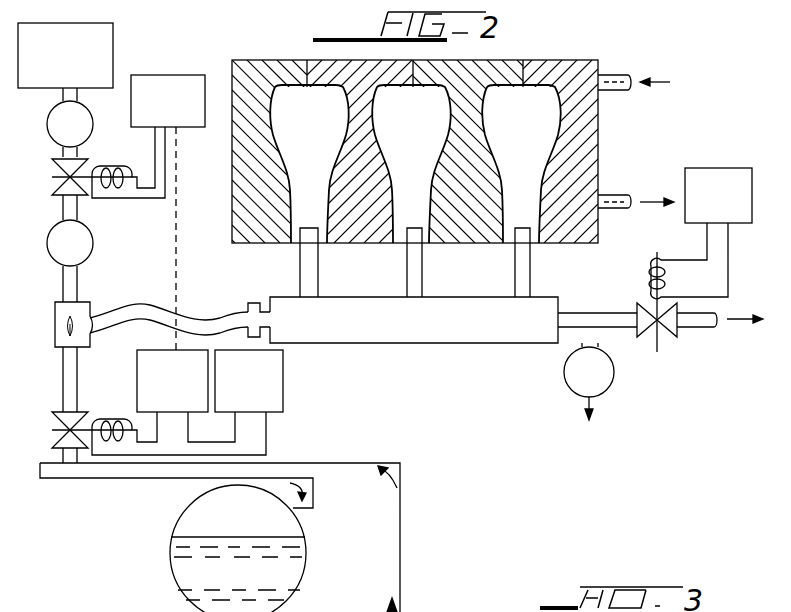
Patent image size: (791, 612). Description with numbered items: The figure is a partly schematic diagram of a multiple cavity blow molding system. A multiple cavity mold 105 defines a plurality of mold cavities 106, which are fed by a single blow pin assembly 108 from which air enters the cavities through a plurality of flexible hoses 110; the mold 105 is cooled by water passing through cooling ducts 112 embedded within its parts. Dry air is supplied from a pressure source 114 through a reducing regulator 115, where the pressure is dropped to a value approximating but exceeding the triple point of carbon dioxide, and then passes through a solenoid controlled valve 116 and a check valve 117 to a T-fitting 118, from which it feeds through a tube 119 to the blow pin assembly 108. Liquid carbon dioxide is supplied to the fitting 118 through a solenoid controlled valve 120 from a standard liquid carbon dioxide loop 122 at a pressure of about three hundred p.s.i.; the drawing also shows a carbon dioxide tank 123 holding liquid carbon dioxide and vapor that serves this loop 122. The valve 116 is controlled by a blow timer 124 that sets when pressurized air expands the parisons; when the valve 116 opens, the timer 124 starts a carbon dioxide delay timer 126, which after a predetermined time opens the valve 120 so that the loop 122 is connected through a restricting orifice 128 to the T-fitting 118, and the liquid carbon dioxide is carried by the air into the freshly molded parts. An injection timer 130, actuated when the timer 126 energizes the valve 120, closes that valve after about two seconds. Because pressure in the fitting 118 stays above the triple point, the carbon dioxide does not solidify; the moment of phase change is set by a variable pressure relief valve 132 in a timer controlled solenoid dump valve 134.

The multiple cavity mold 105 is at (276, 60).
The mold cavities 106 is at (386, 123).
The blow pin assembly 108 is at (448, 345).
The flexible hoses 110 is at (410, 265).
The cooling ducts 112 is at (612, 75).
The pressure source 114 is at (114, 52).
The reducing regulator 115 is at (47, 126).
The solenoid controlled valve 116 is at (56, 171).
The check valve 117 is at (93, 243).
The T-fitting 118 is at (87, 302).
The tube 119 is at (154, 304).
The solenoid controlled valve 120 is at (60, 427).
The liquid carbon dioxide loop 122 is at (400, 565).
The CO2 tank 123 is at (305, 548).
The blow timer 124 is at (160, 75).
The carbon dioxide delay timer 126 is at (137, 380).
The restricting orifice 128 is at (62, 338).
The injection timer 130 is at (283, 404).
The variable pressure relief valve 132 is at (612, 376).
The timer controlled solenoid dump valve 134 is at (663, 332).